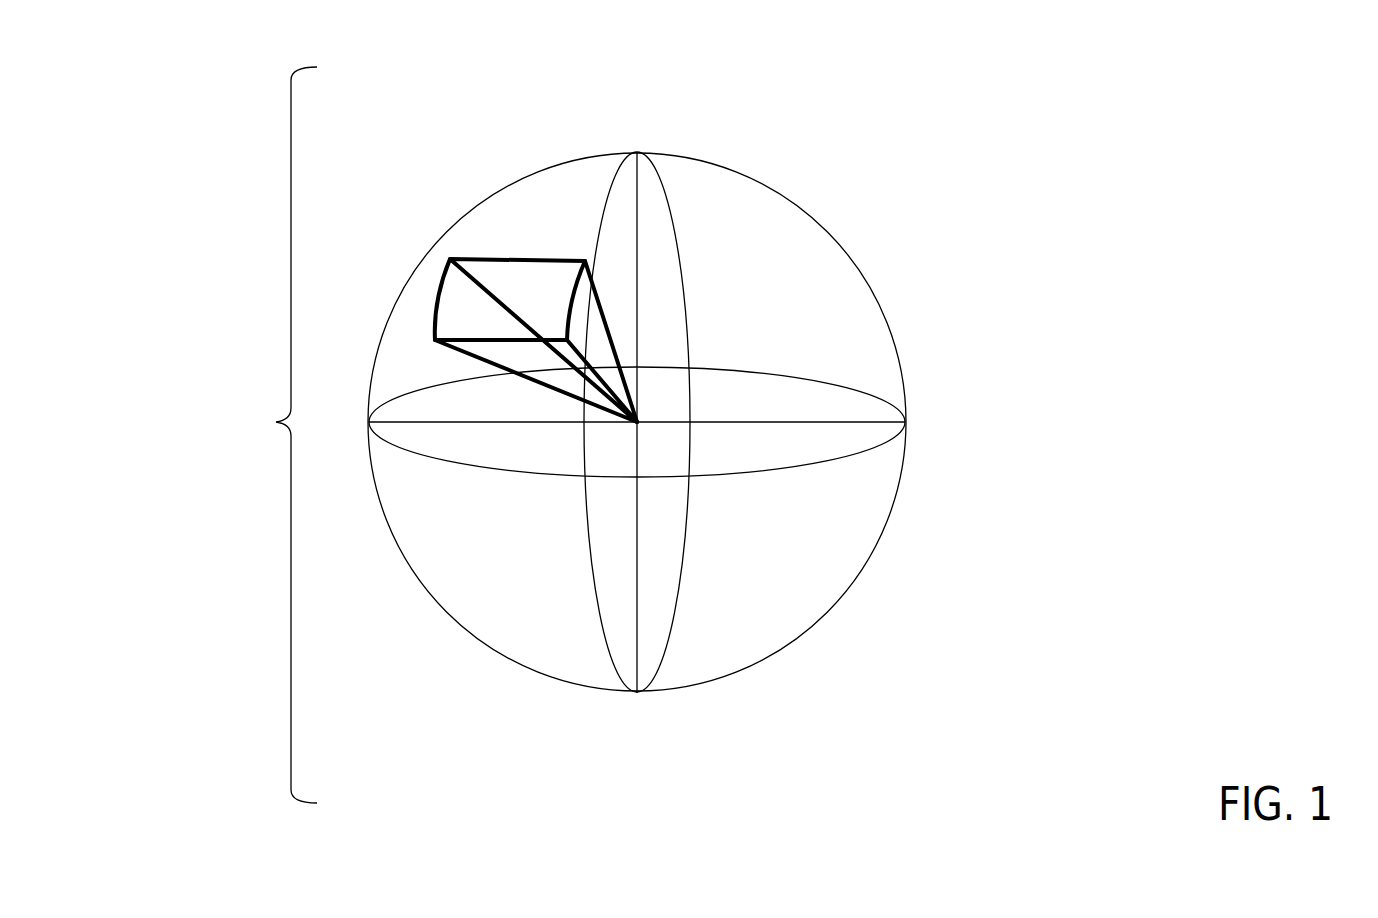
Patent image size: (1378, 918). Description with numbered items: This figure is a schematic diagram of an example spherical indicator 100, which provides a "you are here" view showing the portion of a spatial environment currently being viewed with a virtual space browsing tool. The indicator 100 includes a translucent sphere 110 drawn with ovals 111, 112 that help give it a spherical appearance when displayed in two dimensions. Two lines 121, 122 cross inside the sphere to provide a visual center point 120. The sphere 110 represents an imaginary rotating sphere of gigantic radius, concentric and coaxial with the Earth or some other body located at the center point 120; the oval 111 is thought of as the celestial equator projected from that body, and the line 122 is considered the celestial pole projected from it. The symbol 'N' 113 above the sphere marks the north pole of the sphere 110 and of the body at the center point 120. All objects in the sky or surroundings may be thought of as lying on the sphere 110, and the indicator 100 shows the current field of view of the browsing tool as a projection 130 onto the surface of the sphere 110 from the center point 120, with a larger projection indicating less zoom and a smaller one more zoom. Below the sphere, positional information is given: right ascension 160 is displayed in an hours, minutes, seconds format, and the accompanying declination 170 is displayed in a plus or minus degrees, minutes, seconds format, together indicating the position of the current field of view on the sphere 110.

The spherical indicator 100 is at (258, 435).
The translucent sphere 110 is at (825, 232).
The oval 111 is at (880, 398).
The oval 112 is at (687, 313).
The symbol 'N' 113 is at (627, 85).
The center point 120 is at (637, 422).
The line 121 is at (743, 424).
The line 122 is at (638, 559).
The projection 130 is at (530, 287).
The right ascension 160 is at (570, 731).
The declination coordinate 170 is at (568, 763).